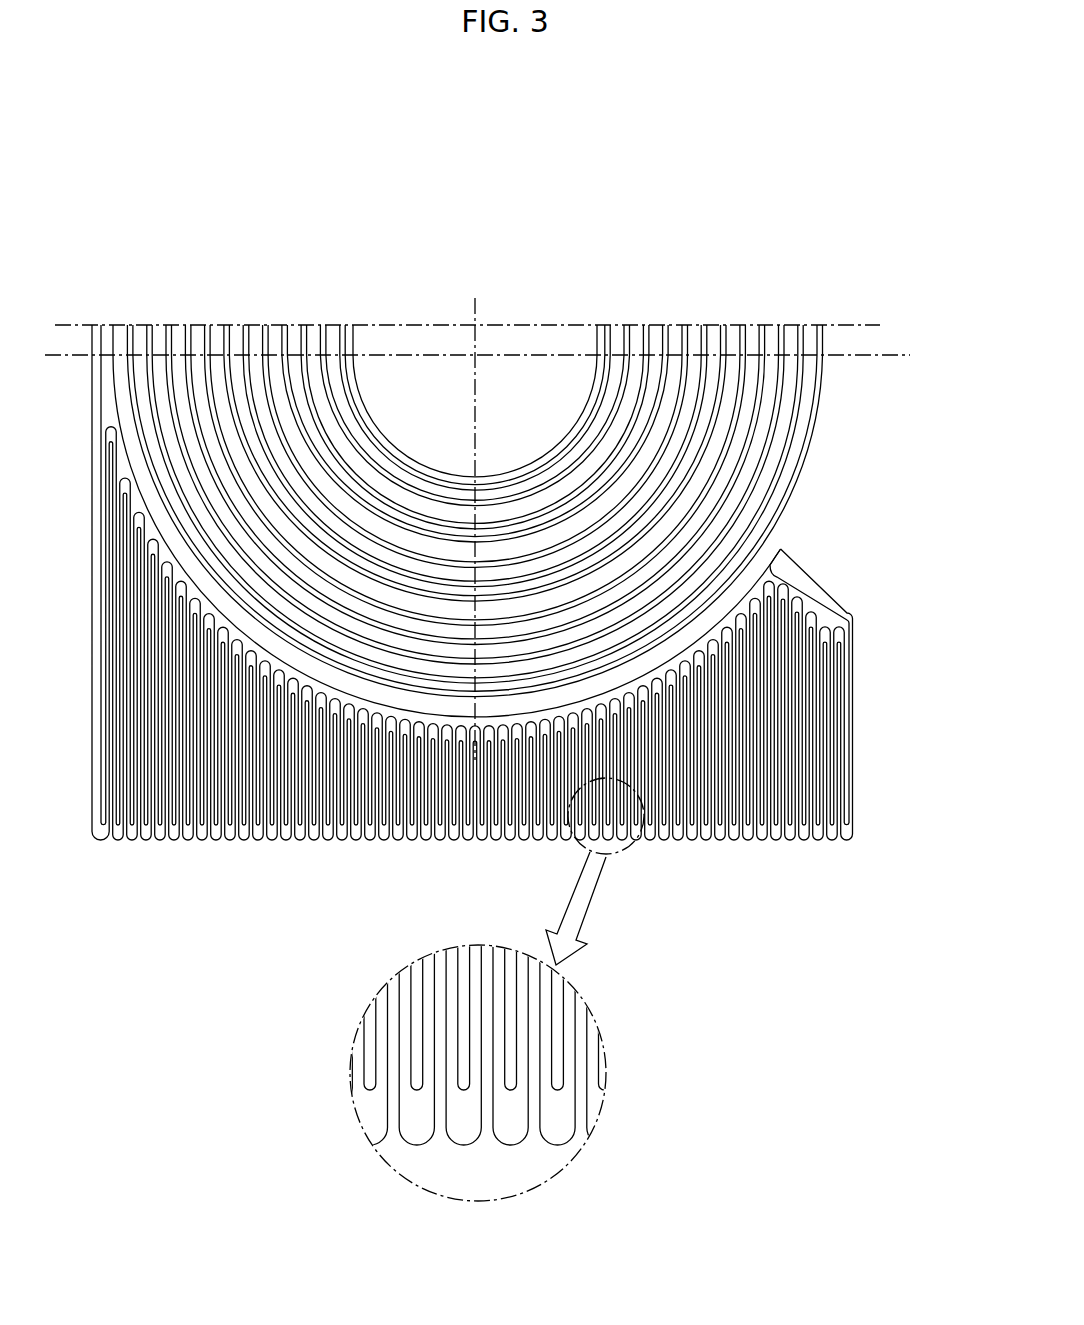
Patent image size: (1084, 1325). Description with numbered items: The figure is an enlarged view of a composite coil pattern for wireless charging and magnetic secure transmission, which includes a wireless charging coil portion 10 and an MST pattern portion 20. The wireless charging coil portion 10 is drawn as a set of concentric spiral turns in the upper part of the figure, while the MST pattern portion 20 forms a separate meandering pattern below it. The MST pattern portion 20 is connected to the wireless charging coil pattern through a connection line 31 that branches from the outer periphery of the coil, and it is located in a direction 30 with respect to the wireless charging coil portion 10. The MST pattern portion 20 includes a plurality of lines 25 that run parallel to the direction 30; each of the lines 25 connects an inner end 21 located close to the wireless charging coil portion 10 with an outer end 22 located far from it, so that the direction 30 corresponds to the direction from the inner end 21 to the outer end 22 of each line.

The wireless charging coil portion 10 is at (529, 490).
The MST pattern portion 20 is at (878, 718).
The inner end 21 is at (744, 614).
The outer end 22 is at (735, 842).
The plurality of lines 25 is at (543, 1063).
The direction 30 is at (475, 400).
The connection line 31 is at (820, 587).